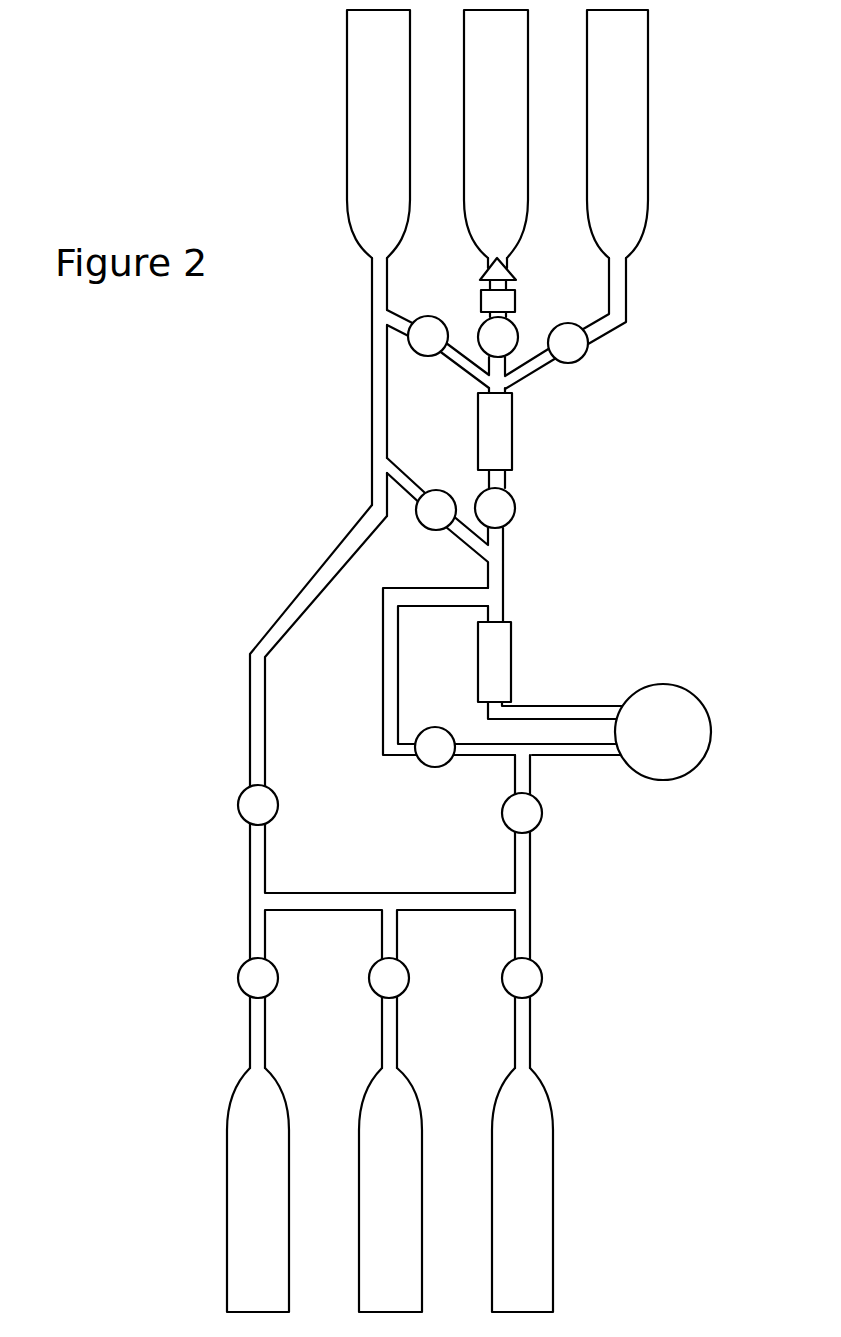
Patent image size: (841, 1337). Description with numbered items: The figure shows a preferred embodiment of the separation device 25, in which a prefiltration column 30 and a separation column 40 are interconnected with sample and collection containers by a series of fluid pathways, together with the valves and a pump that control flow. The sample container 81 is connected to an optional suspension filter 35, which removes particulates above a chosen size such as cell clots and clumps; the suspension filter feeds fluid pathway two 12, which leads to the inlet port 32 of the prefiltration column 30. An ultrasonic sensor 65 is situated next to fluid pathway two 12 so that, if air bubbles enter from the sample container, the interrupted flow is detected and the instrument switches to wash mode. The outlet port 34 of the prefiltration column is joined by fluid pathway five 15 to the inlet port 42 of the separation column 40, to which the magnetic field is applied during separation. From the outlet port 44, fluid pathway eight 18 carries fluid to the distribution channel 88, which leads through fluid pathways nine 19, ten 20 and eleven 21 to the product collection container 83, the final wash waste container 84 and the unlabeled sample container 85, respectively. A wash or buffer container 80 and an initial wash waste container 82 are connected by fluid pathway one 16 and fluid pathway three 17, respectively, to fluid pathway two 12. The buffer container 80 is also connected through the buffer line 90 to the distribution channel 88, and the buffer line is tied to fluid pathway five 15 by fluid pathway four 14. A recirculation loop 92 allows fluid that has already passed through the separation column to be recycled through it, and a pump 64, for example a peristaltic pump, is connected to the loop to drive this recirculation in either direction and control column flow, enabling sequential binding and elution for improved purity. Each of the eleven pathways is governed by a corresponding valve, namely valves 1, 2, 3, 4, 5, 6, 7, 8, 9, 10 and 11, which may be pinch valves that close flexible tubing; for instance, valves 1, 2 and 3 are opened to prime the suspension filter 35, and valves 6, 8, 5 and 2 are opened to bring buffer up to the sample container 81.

The valve one 1 is at (428, 336).
The valve two 2 is at (498, 337).
The valve three 3 is at (568, 343).
The valve four 4 is at (436, 510).
The valve five 5 is at (495, 508).
The valve six 6 is at (273, 803).
The valve seven 7 is at (439, 762).
The valve eight 8 is at (537, 818).
The valve nine 9 is at (256, 978).
The valve ten 10 is at (393, 979).
The valve eleven 11 is at (528, 981).
The fluid pathway two 12 is at (477, 393).
The fluid pathway four 14 is at (410, 477).
The fluid pathway five 15 is at (495, 572).
The fluid pathway one 16 is at (391, 314).
The fluid pathway three 17 is at (606, 326).
The fluid pathway eight 18 is at (607, 710).
The fluid pathway nine 19 is at (253, 1020).
The fluid pathway ten 20 is at (385, 1040).
The fluid pathway eleven 21 is at (525, 1042).
The separation device 25 is at (330, 473).
The prefiltration column 30 is at (495, 431).
The inlet port 32 is at (507, 393).
The outlet port 34 is at (503, 472).
The suspension filter 35 is at (503, 274).
The separation column 40 is at (494, 662).
The inlet port 42 is at (500, 620).
The outlet port 44 is at (488, 707).
The pump 64 is at (663, 732).
The ultrasonic sensor 65 is at (498, 303).
The wash or buffer container 80 is at (378, 134).
The sample container 81 is at (496, 139).
The initial wash waste container 82 is at (617, 134).
The product collection container 83 is at (258, 1190).
The final wash waste container 84 is at (390, 1190).
The unlabeled sample container 85 is at (522, 1190).
The distribution channel 88 is at (457, 895).
The buffer line 90 is at (310, 587).
The recirculation loop 92 is at (380, 706).